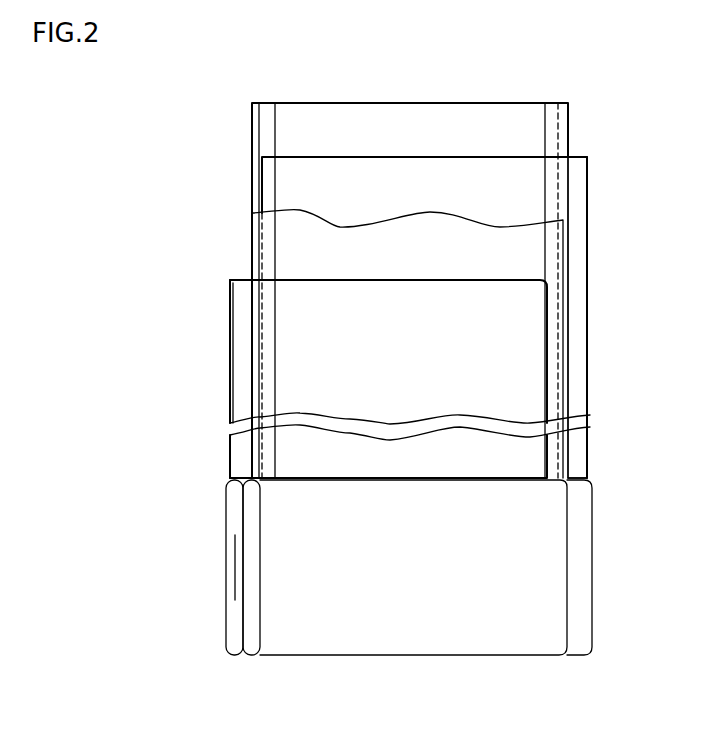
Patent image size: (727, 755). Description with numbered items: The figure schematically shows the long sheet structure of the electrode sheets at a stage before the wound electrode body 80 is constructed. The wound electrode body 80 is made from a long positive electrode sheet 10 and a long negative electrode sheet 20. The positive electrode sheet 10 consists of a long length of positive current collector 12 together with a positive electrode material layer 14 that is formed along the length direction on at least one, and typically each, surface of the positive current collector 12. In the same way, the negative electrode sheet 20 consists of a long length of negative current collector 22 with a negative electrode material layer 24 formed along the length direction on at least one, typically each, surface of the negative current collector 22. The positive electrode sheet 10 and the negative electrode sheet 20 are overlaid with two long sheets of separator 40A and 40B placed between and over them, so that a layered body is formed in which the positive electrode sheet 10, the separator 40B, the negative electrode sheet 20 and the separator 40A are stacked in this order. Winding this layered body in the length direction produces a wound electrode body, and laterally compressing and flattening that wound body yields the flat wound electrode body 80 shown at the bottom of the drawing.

The separator 40A is at (274, 122).
The separator 40B is at (262, 242).
The negative electrode material layer 24 is at (568, 173).
The negative electrode sheet 20 is at (590, 228).
The negative current collector 22 is at (590, 320).
The positive electrode material layer 14 is at (285, 298).
The positive electrode sheet 10 is at (230, 345).
The positive current collector 12 is at (230, 418).
The wound electrode body 80 is at (467, 634).